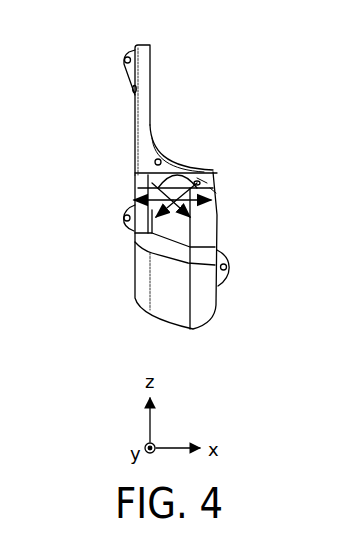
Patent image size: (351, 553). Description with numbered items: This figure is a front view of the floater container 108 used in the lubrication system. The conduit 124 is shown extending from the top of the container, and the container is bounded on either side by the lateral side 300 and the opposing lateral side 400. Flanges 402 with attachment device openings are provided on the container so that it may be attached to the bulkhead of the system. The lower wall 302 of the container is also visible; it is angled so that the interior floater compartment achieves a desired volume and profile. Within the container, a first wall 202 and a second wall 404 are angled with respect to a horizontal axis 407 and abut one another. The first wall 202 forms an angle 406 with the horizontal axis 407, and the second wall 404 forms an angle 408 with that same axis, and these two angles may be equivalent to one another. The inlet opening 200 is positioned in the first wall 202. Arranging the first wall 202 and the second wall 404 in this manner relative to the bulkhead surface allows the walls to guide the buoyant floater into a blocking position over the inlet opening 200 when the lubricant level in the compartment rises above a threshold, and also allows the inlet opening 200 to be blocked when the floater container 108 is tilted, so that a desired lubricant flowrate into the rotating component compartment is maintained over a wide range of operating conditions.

The floater container 108 is at (254, 118).
The conduit 124 is at (147, 105).
The inlet opening 200 is at (215, 176).
The first wall 202 is at (218, 193).
The lateral side 300 is at (238, 229).
The lower wall 302 is at (172, 289).
The opposing lateral side 400 is at (96, 249).
The flanges 402 is at (123, 63).
The second wall 404 is at (147, 170).
The angle 406 is at (126, 202).
The horizontal axis 407 is at (137, 172).
The angle 408 is at (219, 210).